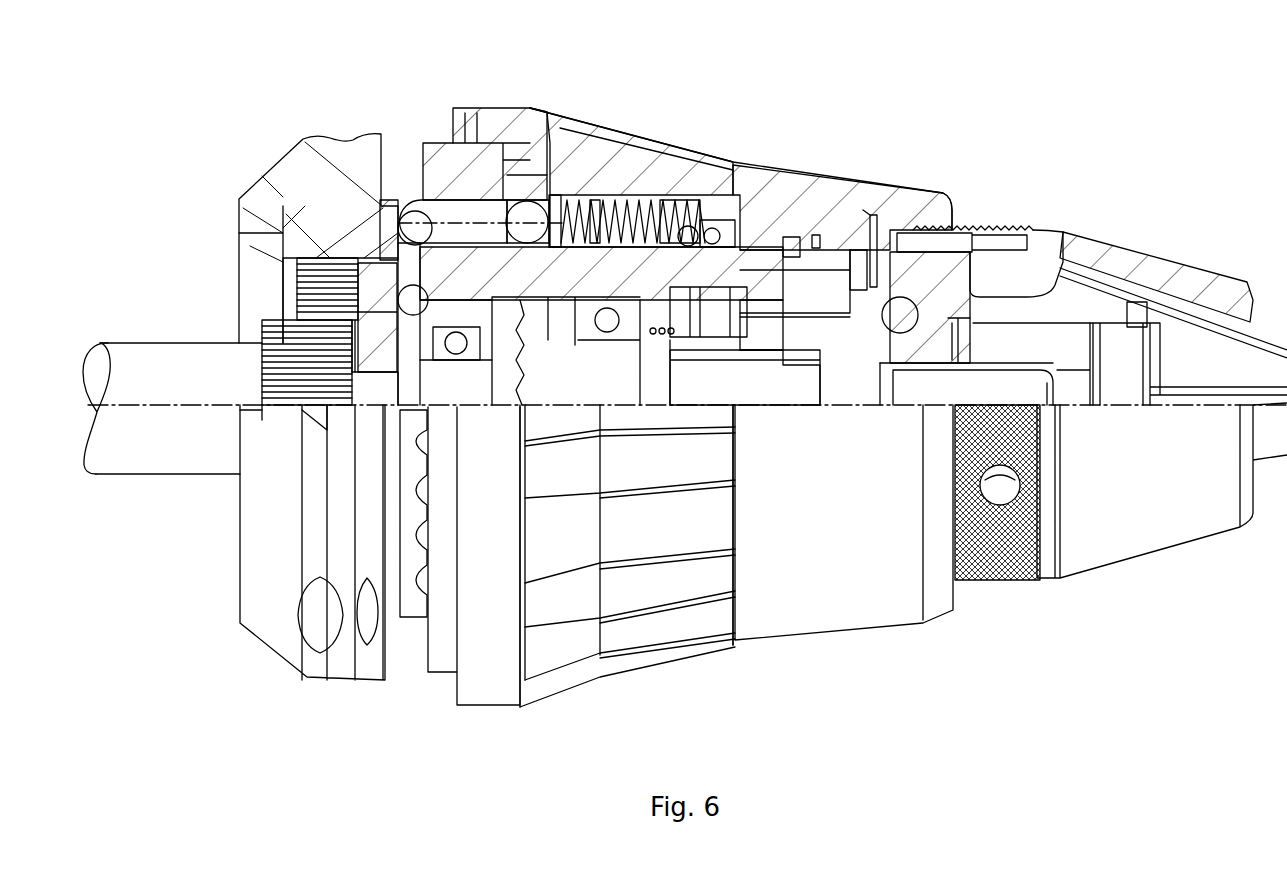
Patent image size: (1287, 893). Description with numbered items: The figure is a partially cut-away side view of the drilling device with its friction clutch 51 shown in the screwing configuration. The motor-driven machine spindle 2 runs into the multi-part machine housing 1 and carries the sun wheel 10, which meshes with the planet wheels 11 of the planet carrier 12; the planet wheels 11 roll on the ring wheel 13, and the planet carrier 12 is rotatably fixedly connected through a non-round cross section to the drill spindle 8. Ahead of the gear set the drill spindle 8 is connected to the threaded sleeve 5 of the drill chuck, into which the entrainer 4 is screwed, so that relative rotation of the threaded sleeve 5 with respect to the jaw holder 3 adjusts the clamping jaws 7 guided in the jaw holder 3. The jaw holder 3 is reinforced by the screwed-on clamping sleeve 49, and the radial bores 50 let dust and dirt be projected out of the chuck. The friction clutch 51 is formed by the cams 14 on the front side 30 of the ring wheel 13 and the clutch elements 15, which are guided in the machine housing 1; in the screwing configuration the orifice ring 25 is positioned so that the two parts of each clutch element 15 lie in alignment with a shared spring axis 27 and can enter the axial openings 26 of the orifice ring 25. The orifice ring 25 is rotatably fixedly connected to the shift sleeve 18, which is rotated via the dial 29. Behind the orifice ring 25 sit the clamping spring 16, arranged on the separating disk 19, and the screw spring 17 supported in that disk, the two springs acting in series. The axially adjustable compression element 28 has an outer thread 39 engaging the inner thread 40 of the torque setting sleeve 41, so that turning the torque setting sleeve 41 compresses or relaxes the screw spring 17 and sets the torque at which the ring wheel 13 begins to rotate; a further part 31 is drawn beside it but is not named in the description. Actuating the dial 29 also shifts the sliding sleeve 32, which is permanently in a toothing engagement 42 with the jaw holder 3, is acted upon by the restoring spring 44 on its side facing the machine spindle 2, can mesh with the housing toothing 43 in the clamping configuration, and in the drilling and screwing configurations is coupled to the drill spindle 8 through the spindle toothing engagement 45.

The machine housing 1 is at (303, 192).
The machine spindle 2 is at (197, 367).
The jaw holder 3 is at (892, 270).
The entrainer 4 is at (933, 390).
The threaded sleeve 5 is at (927, 340).
The clamping jaws 7 is at (1195, 362).
The drill spindle 8 is at (711, 375).
The sun wheel 10 is at (287, 357).
The planet wheels 11 is at (327, 290).
The planet carrier 12 is at (372, 342).
The ring wheel 13 is at (347, 237).
The cams 14 is at (410, 554).
The clutch elements 15 is at (427, 232).
The clamping spring 16 is at (588, 230).
The screw spring 17 is at (626, 230).
The shift sleeve 18 is at (655, 215).
The separating disk 19 is at (600, 215).
The orifice ring 25 is at (524, 220).
The axial openings 26 is at (547, 240).
The spring axis 27 is at (445, 225).
The compression element 28 is at (710, 215).
The dial 29 is at (769, 212).
The front side 30 is at (827, 225).
The disc 31 is at (863, 212).
The sliding sleeve 32 is at (818, 305).
The outer thread 39 is at (686, 205).
The inner thread 40 is at (744, 212).
The torque setting sleeve 41 is at (583, 650).
The toothing engagement 42 is at (857, 308).
The housing toothing 43 is at (732, 287).
The restoring spring 44 is at (731, 313).
The spindle toothing engagement 45 is at (773, 290).
The clamping sleeve 49 is at (1090, 257).
The radial bores 50 is at (1020, 477).
The friction clutch 51 is at (413, 623).